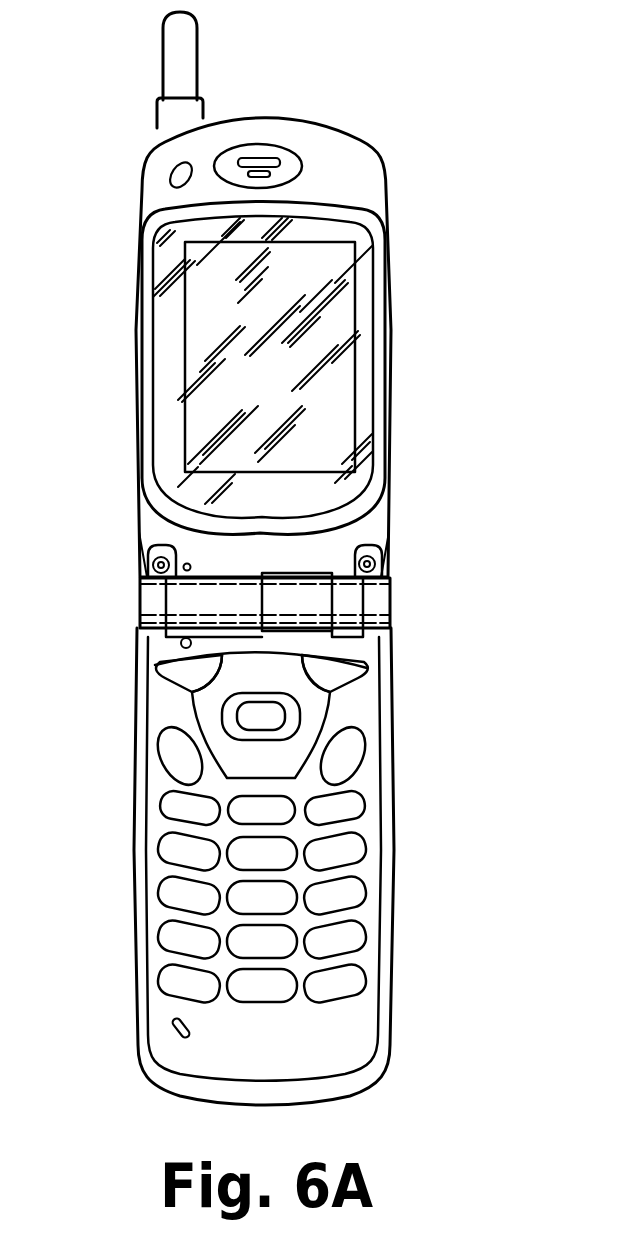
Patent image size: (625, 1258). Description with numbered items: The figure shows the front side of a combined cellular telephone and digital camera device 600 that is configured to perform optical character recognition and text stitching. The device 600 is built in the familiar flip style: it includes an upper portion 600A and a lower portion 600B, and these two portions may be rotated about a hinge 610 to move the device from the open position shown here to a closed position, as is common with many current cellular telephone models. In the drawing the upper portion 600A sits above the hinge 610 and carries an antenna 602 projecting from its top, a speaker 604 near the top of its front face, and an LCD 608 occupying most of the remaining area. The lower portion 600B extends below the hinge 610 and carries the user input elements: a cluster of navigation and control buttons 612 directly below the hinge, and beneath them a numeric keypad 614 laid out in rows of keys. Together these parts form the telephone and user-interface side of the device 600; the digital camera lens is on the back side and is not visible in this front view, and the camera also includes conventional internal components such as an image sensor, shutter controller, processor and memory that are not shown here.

The combined cellular telephone and digital camera device 600 is at (432, 100).
The upper portion 600A is at (125, 128).
The lower portion 600B is at (125, 632).
The antenna 602 is at (178, 42).
The speaker 604 is at (263, 160).
The LCD 608 is at (360, 358).
The hinge 610 is at (390, 603).
The navigation and control buttons 612 is at (404, 653).
The numeric keypad 614 is at (404, 790).